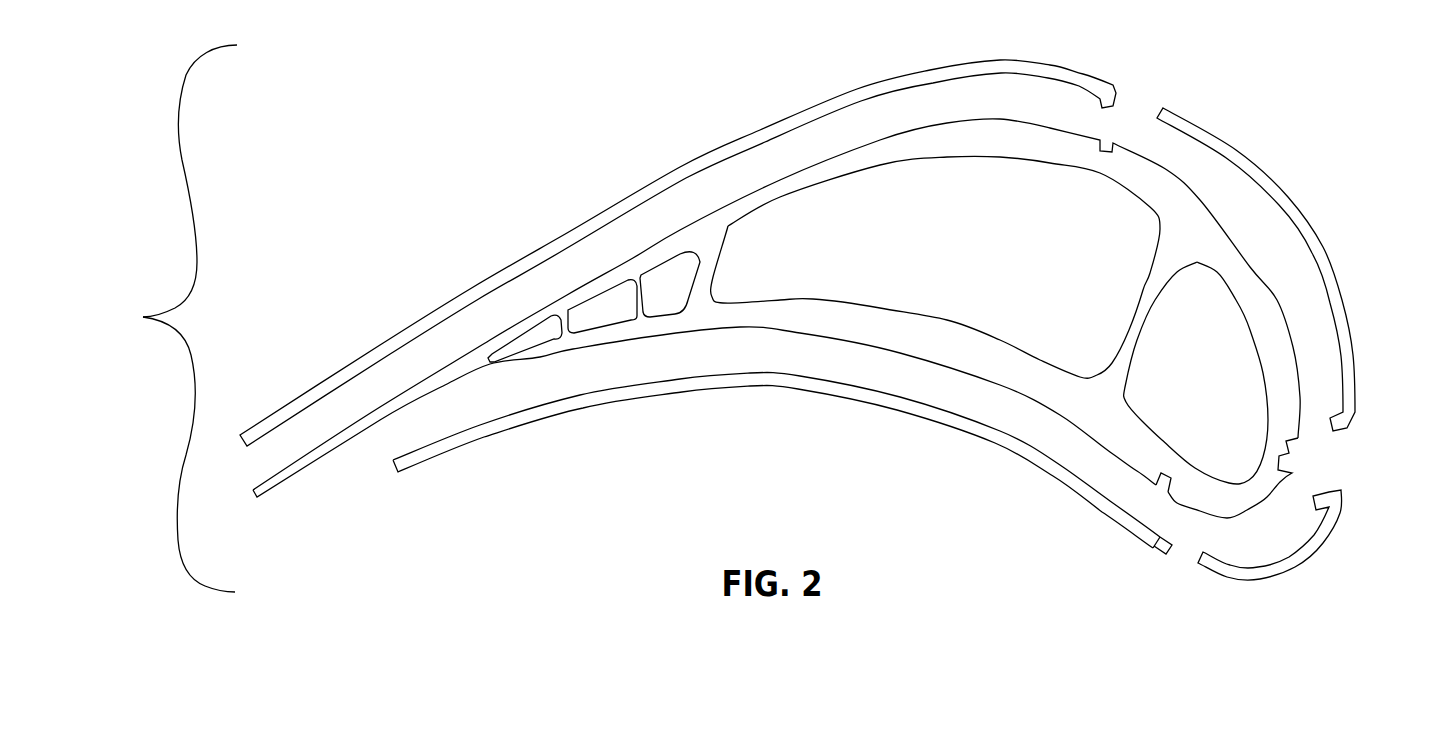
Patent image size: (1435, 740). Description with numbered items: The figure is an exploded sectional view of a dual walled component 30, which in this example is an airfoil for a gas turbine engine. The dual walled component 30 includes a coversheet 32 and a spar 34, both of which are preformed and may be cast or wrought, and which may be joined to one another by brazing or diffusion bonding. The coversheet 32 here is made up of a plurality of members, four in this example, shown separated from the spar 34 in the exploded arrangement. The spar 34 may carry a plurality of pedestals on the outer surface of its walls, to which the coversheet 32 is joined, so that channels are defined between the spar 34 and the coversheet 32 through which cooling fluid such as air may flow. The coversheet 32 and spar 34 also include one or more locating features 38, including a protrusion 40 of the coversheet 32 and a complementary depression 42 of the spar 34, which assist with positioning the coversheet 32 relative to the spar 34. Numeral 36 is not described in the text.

The dual walled component 30 is at (146, 317).
The coversheet 32 is at (655, 186).
The spar 34 is at (1167, 197).
The pockets 36 is at (571, 322).
The locating features 38 is at (1183, 543).
The protrusion 40 is at (1160, 543).
The depression 42 is at (1161, 490).